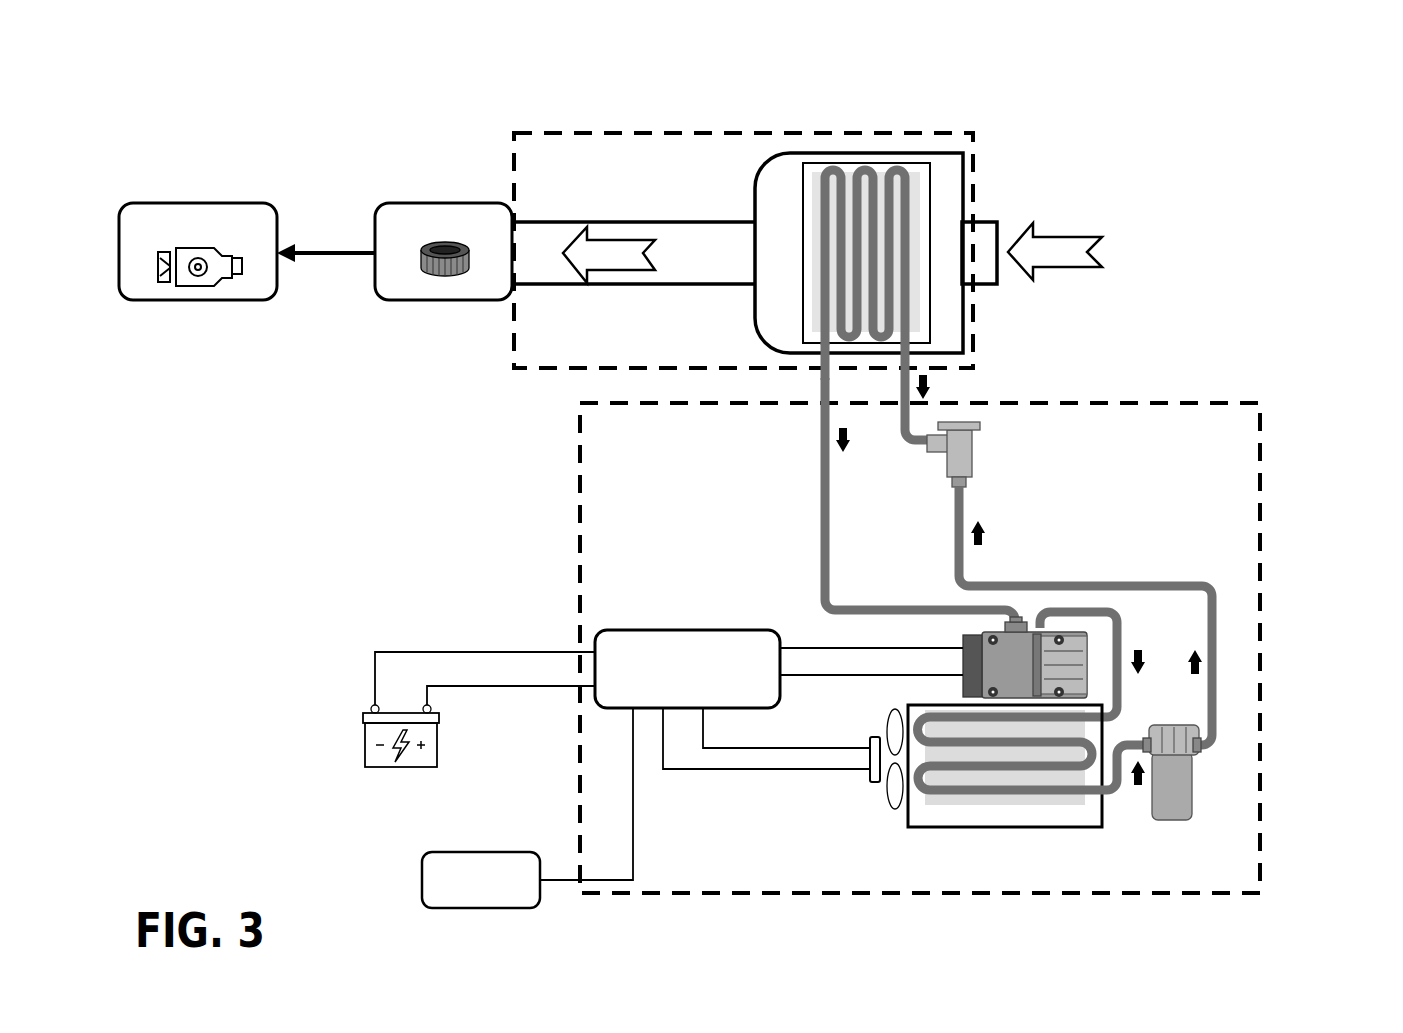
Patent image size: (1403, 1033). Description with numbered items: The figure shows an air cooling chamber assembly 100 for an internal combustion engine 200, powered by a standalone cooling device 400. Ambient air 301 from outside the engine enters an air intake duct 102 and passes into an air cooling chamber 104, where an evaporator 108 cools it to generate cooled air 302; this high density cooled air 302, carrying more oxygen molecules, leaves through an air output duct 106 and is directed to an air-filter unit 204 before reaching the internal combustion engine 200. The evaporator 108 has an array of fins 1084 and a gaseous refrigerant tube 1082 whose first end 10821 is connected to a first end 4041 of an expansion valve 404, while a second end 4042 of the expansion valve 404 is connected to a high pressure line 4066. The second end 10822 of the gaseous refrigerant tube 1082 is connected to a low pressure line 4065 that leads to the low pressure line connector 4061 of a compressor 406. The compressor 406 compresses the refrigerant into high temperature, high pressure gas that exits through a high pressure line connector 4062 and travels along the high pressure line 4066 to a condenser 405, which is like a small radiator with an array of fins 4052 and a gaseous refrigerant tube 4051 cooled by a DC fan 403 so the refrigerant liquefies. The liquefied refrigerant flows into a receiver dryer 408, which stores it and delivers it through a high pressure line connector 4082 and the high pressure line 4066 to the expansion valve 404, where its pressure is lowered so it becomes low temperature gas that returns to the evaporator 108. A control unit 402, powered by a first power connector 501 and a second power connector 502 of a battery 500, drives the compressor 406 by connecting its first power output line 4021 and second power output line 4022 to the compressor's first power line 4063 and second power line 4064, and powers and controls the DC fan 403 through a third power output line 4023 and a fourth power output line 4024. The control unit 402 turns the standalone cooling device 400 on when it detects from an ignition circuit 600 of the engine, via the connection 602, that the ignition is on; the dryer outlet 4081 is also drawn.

The air cooling chamber assembly 100 is at (514, 368).
The air intake duct 102 is at (975, 222).
The air cooling chamber 104 is at (963, 150).
The air output duct 106 is at (688, 222).
The evaporator 108 is at (883, 163).
The gaseous refrigerant tube 1082 is at (836, 180).
The array of fins 1084 is at (810, 178).
The first end of the gaseous refrigerant tube 10821 is at (903, 355).
The second end of the gaseous refrigerant tube 10822 is at (830, 353).
The internal combustion engine 200 is at (205, 203).
The air-filter unit 204 is at (447, 203).
The ambient air 301 is at (1057, 232).
The cooled air 302 is at (600, 240).
The standalone cooling device 400 is at (580, 460).
The control unit 402 is at (597, 632).
The first power output line 4021 is at (788, 648).
The second power output line 4022 is at (817, 675).
The third power output line 4023 is at (755, 748).
The fourth power output line 4024 is at (725, 770).
The DC fan 403 is at (878, 783).
The expansion valve 404 is at (973, 450).
The first end of the expansion valve 4041 is at (968, 424).
The second end of the expansion valve 4042 is at (968, 485).
The condenser 405 is at (1005, 828).
The gaseous refrigerant tube 4051 is at (916, 790).
The array of fins 4052 is at (960, 803).
The compressor 406 is at (1215, 588).
The low pressure line connector 4061 is at (1022, 620).
The high pressure line connector 4062 is at (1090, 660).
The first power line 4063 is at (963, 645).
The second power line 4064 is at (965, 676).
The low pressure line 4065 is at (821, 568).
The high pressure line 4066 is at (1125, 693).
The receiver dryer 408 is at (1193, 812).
The dryer outlet 4081 is at (1192, 764).
The high pressure line connector 4082 is at (1203, 746).
The battery 500 is at (365, 728).
The first power connector 501 is at (485, 686).
The second power connector 502 is at (418, 652).
The ignition circuit 600 is at (420, 880).
The ignition signal wire 602 is at (630, 817).